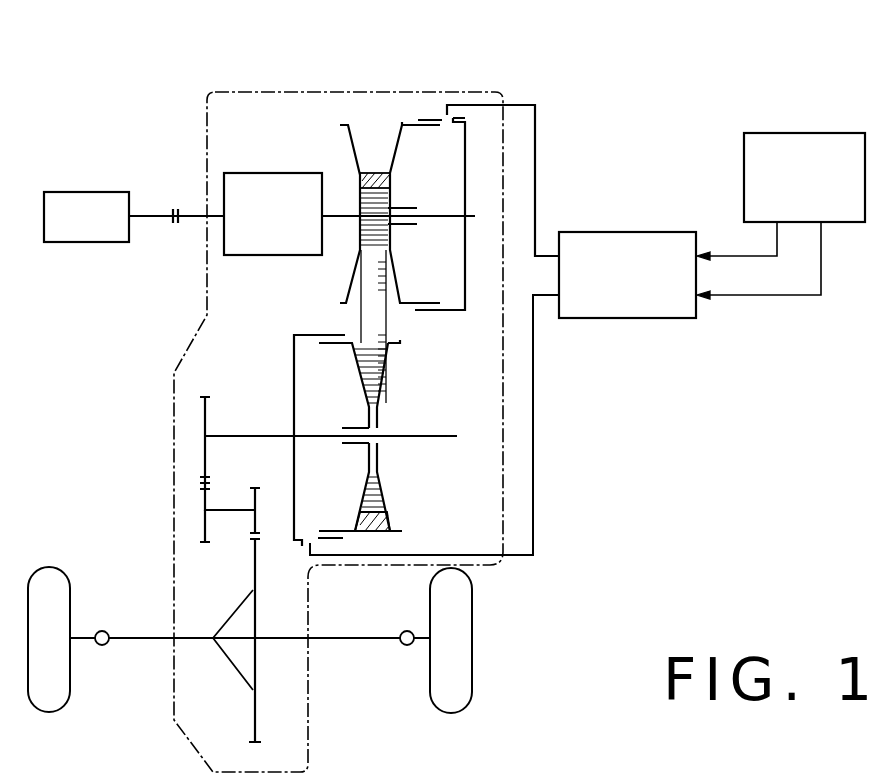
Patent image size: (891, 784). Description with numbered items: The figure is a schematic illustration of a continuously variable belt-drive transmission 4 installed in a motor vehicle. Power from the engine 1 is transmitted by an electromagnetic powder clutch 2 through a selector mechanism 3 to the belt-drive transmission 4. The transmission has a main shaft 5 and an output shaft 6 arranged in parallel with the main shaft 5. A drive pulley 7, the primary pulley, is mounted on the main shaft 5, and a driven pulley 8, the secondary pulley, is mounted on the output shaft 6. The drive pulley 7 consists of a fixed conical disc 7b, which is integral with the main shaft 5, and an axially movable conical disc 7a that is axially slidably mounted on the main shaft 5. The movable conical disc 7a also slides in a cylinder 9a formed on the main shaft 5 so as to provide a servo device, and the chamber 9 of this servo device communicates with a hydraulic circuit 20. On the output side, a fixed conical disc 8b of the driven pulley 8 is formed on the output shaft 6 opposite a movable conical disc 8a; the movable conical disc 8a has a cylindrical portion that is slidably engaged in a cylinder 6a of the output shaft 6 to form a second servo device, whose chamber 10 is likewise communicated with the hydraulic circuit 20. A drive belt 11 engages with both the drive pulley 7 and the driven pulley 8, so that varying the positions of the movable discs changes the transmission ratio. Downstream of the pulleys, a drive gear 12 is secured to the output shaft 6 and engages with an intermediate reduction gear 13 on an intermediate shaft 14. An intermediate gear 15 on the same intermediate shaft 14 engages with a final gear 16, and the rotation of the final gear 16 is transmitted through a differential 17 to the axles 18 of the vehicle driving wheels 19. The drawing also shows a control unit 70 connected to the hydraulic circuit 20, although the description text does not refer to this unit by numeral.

The engine 1 is at (95, 192).
The electromagnetic powder clutch 2 is at (175, 205).
The selector mechanism 3 is at (278, 173).
The continuously variable belt-drive transmission 4 is at (383, 122).
The main shaft 5 is at (335, 218).
The output shaft 6 is at (250, 436).
The cylinder of the output shaft 6a is at (315, 333).
The drive pulley 7 is at (426, 168).
The movable conical disc 7a is at (408, 127).
The fixed conical disc 7b is at (352, 148).
The driven pulley 8 is at (383, 435).
The movable conical disc 8a is at (358, 348).
The fixed conical disc 8b is at (382, 378).
The chamber 9 is at (447, 175).
The cylinder 9a is at (445, 310).
The chamber 10 is at (300, 372).
The drive belt 11 is at (375, 537).
The drive gear 12 is at (205, 392).
The intermediate reduction gear 13 is at (205, 548).
The intermediate shaft 14 is at (232, 510).
The intermediate gear 15 is at (255, 488).
The final gear 16 is at (255, 744).
The differential 17 is at (238, 622).
The axles 18 is at (90, 644).
The vehicle driving wheels 19 is at (62, 597).
The hydraulic circuit 20 is at (625, 320).
The control unit 70 is at (785, 132).